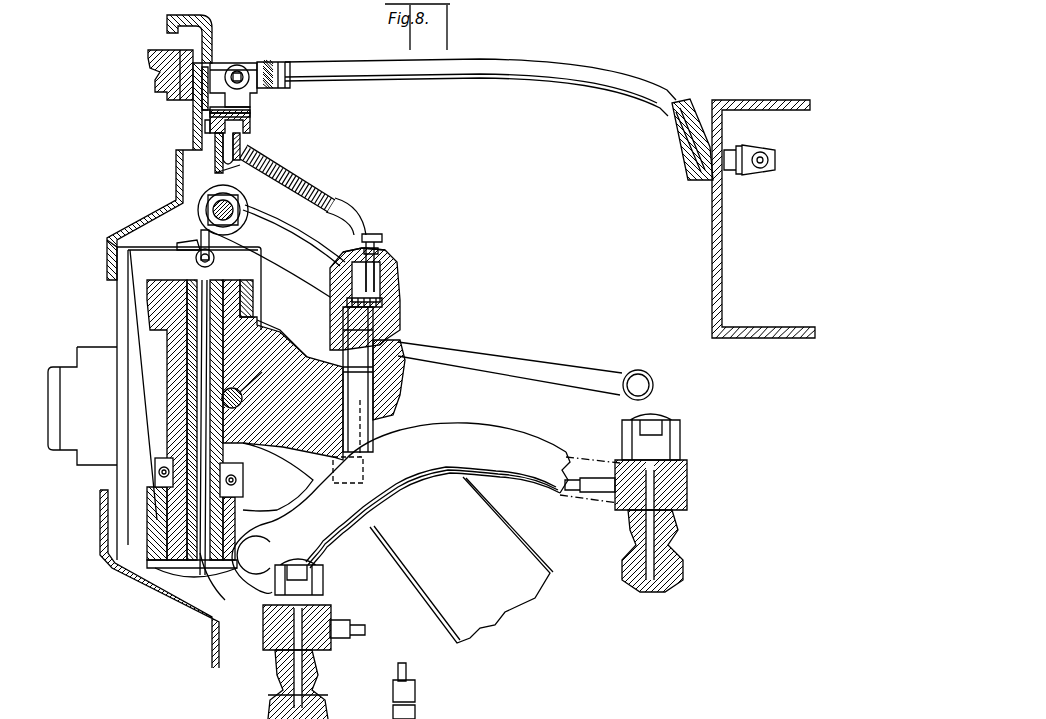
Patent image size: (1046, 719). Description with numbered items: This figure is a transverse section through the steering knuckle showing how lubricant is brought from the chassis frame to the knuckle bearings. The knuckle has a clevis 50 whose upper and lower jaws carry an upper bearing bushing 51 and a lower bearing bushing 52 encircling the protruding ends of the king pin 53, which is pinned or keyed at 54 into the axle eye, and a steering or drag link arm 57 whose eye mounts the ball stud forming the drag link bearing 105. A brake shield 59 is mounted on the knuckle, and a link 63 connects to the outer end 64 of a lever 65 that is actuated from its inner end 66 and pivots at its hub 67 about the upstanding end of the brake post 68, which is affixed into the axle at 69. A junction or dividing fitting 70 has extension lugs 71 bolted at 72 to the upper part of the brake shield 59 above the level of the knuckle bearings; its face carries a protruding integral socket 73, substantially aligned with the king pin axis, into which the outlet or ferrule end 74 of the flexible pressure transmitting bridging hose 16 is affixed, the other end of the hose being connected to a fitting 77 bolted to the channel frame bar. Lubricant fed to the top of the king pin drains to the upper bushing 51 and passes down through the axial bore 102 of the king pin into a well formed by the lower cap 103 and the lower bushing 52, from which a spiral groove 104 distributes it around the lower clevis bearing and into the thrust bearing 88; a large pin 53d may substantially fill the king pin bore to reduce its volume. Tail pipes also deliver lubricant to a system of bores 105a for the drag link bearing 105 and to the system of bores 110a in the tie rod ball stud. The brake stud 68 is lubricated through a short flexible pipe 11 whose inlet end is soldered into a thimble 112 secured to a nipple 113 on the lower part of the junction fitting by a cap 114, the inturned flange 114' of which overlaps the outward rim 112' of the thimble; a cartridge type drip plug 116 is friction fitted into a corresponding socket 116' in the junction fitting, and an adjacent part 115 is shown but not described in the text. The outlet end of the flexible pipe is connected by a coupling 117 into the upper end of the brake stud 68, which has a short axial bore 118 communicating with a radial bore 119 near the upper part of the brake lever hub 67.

The flexible hose 11 is at (315, 180).
The flexible pressure transmitting bridging hose 16 is at (553, 80).
The clevis 50 is at (143, 280).
The upper bearing bushing 51 is at (253, 300).
The lower bearing bushing 52 is at (150, 540).
The king pin 53 is at (265, 338).
The large pin 53d is at (200, 425).
The king pin key 54 is at (290, 356).
The steering or drag link arm 57 is at (495, 432).
The brake shield 59 is at (178, 181).
The link 63 is at (240, 208).
The outer end of lever 64 is at (285, 240).
The lever 65 is at (300, 268).
The inner end of lever 66 is at (530, 345).
The lever hub 67 is at (398, 265).
The brake post 68 is at (388, 252).
The brake post fixing 69 is at (362, 392).
The junction or dividing fitting 70 is at (222, 64).
The extension lugs 71 is at (210, 57).
The bolts 72 is at (210, 116).
The socket 73 is at (246, 68).
The outlet ferrule end 74 is at (276, 62).
The frame fitting 77 is at (683, 170).
The thrust bearing 88 is at (244, 478).
The axial bore 102 is at (220, 282).
The lower cap 103 is at (185, 568).
The spiral groove 104 is at (162, 570).
The drag link bearing 105 is at (668, 478).
The system of bores 105a is at (655, 512).
The system of bores 110a is at (272, 662).
The thimble 112 is at (255, 141).
The outward rim of thimble 112' is at (157, 129).
The nipple 113 is at (250, 108).
The cap 114 is at (258, 121).
The inturned flange of cap 114' is at (300, 125).
The member 115 is at (212, 127).
The drip plug 116 is at (262, 148).
The drip plug socket 116' is at (304, 101).
The coupling 117 is at (380, 240).
The axial bore 118 is at (383, 281).
The radial bore 119 is at (332, 297).